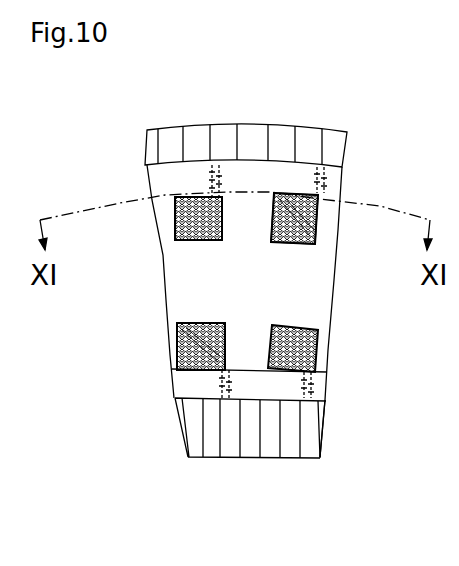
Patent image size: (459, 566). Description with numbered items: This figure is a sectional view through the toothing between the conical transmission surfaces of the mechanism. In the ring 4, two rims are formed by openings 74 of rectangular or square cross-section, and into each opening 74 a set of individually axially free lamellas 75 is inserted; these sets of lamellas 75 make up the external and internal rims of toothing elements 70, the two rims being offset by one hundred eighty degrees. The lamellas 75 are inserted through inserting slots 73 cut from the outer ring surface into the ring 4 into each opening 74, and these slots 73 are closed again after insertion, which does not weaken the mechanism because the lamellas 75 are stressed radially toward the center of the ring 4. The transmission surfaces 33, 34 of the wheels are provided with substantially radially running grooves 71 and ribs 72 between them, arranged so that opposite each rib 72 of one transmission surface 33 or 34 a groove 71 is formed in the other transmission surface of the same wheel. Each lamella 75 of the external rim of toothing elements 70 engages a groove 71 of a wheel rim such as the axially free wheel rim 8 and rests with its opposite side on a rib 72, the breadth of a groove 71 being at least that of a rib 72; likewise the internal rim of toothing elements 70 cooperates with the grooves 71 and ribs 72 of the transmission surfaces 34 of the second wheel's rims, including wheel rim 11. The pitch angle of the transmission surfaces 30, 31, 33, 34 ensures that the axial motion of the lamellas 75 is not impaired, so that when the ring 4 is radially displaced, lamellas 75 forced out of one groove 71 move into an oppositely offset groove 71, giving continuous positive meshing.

The ring 4 is at (303, 303).
The axially free wheel rim 8 is at (349, 147).
The wheel rim 11 is at (332, 425).
The transmission surface 30 is at (176, 213).
The transmission surface 31 is at (205, 375).
The transmission surface 33 is at (328, 145).
The transmission surface 34 is at (307, 428).
The toothing elements 70 is at (199, 320).
The groove 71 is at (172, 142).
The rib 72 is at (193, 142).
The inserting slot 73 is at (206, 399).
The opening 74 is at (316, 232).
The lamella 75 is at (310, 228).